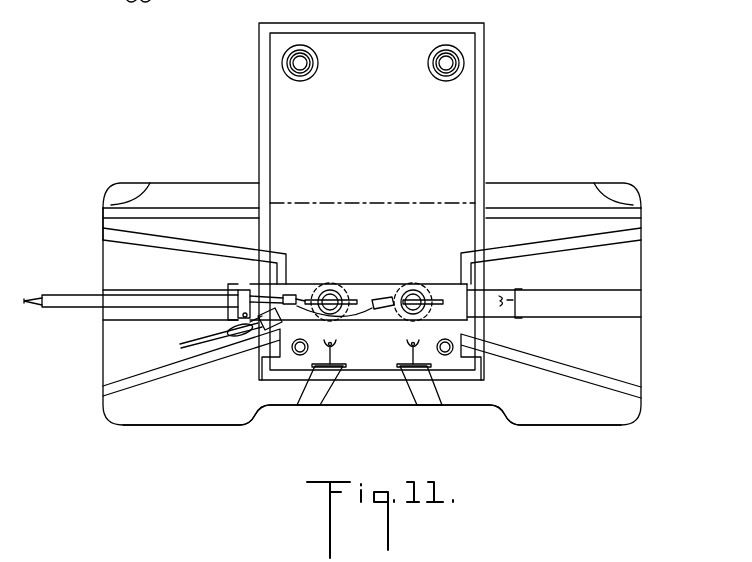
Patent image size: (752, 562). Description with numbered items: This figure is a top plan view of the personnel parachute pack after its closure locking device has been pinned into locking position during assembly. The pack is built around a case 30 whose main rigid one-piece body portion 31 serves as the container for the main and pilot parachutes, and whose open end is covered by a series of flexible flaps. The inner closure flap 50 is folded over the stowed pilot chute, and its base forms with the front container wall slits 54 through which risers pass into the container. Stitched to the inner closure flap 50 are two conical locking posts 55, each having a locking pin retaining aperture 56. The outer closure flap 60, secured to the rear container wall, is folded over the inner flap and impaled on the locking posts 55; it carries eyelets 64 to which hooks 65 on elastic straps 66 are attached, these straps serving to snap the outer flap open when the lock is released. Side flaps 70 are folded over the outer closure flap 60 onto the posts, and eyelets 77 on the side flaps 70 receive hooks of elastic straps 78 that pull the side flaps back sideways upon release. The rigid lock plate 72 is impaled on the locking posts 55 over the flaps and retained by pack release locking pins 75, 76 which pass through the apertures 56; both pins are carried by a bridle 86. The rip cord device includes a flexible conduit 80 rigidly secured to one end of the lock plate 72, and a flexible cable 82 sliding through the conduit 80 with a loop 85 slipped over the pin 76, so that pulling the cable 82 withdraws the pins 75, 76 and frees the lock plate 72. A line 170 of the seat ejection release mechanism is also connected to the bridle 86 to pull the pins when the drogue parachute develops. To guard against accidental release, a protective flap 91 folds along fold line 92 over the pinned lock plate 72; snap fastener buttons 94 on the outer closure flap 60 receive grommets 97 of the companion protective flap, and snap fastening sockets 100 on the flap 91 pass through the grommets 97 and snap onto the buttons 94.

The case 30 is at (607, 181).
The main rigid one-piece body portion 31 is at (107, 192).
The inner closure flap 50 is at (215, 193).
The slits 54 is at (128, 193).
The conical locking posts 55 is at (340, 290).
The locking pin retaining apertures 56 is at (377, 296).
The outer closure flap 60 is at (545, 413).
The eyelets 64 is at (405, 348).
The hooks 65 is at (286, 400).
The elastic straps 66 is at (332, 400).
The side flaps 70 is at (119, 355).
The lock plate 72 is at (260, 282).
The pack release locking pin 75 is at (462, 283).
The pack release locking pin 76 is at (366, 296).
The eyelets 77 is at (512, 312).
The elastic straps 78 is at (120, 308).
The flexible conduit 80 is at (66, 296).
The flexible cable 82 is at (24, 304).
The loop 85 is at (318, 290).
The bridle 86 is at (291, 290).
The protective flap 91 is at (376, 42).
The fold line 92 is at (357, 203).
The snap fastener buttons 94 is at (267, 360).
The grommets 97 is at (283, 63).
The snap fastening sockets 100 is at (302, 57).
The line 170 is at (198, 337).